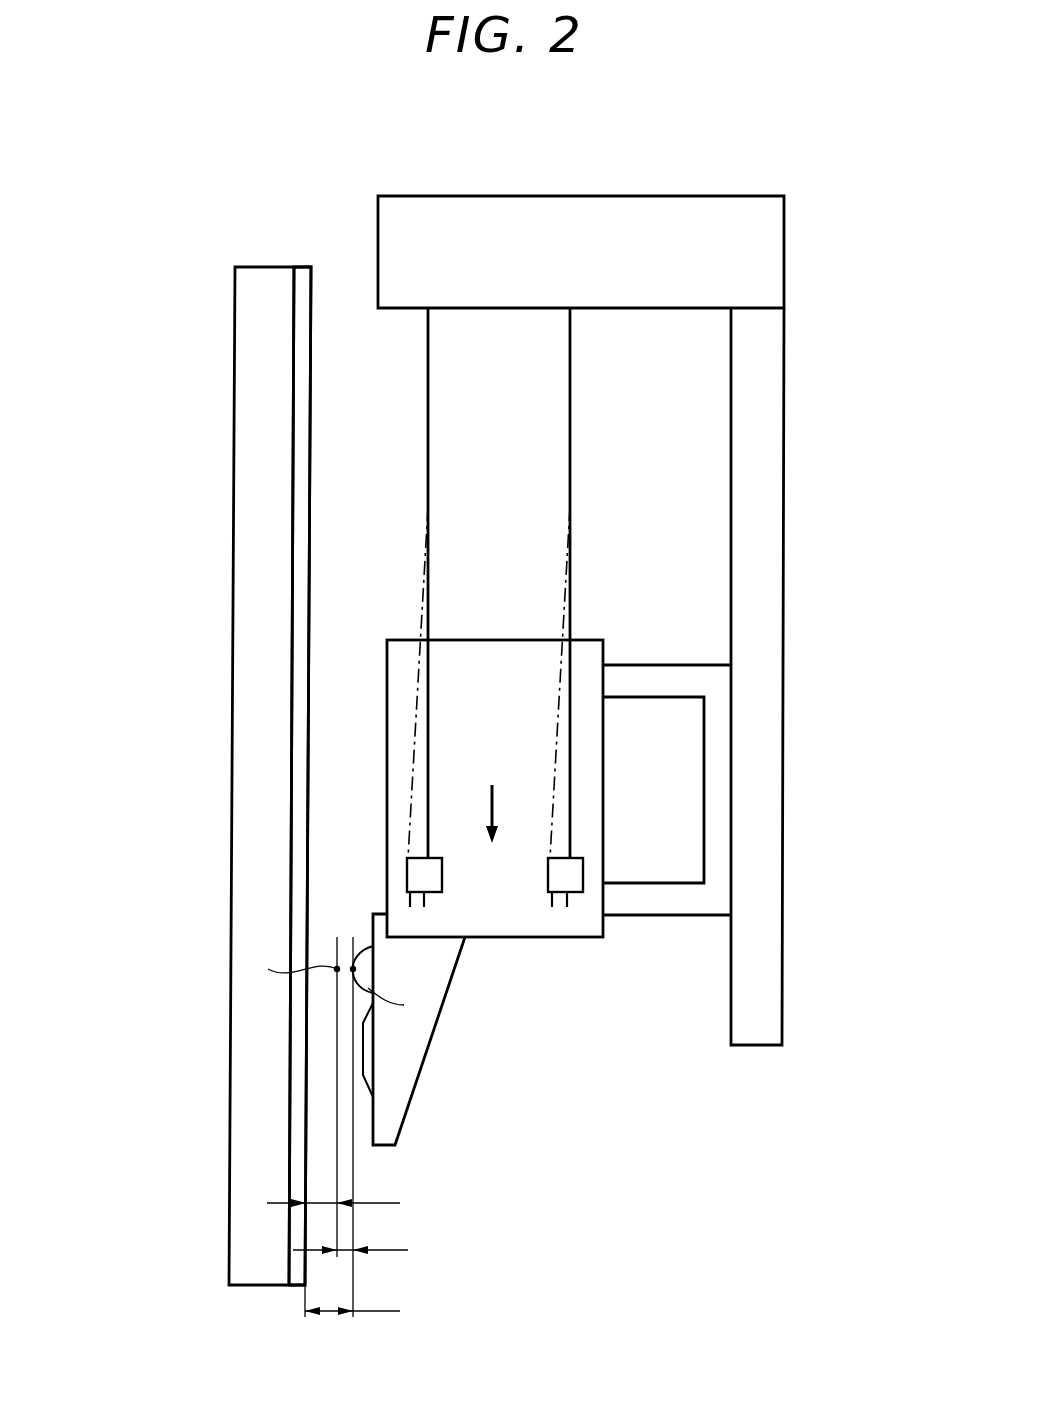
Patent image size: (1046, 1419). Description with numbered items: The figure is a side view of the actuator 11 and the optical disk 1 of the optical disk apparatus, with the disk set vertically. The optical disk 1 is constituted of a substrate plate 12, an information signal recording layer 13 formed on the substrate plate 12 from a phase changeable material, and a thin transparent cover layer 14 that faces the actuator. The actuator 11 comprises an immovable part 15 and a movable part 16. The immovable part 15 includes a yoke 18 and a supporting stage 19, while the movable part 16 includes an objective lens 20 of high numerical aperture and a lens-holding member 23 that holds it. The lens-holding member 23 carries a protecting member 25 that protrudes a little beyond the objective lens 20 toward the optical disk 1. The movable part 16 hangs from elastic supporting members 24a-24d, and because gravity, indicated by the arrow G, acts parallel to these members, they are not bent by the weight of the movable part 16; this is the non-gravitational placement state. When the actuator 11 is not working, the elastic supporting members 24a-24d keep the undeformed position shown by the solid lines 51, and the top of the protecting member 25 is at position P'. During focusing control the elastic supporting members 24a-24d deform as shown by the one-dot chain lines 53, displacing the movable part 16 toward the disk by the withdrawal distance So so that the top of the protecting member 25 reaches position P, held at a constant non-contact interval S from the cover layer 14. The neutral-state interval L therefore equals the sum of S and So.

The optical disk 1 is at (220, 309).
The actuator 11 is at (322, 216).
The substrate plate 12 is at (247, 402).
The information signal recording layer 13 is at (297, 370).
The cover layer 14 is at (303, 460).
The immovable part 15 is at (684, 172).
The movable part 16 is at (596, 951).
The yoke 18 is at (673, 676).
The supporting stage 19 is at (494, 213).
The objective lens 20 is at (373, 1055).
The lens-holding member 23 is at (497, 650).
The elastic supporting members 24a-24d is at (428, 388).
The protecting member 25 is at (364, 955).
The solid lines 51 is at (424, 907).
The one-dot chain lines 53 is at (410, 907).